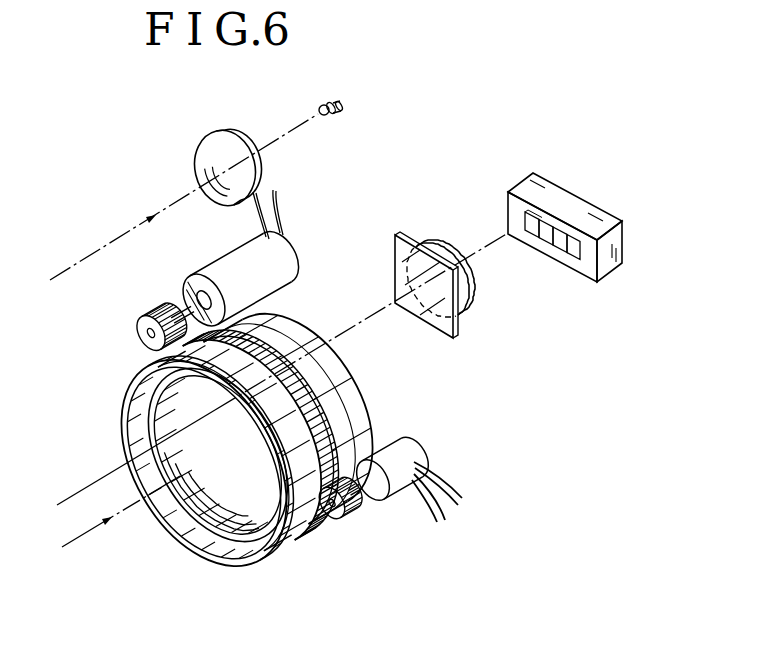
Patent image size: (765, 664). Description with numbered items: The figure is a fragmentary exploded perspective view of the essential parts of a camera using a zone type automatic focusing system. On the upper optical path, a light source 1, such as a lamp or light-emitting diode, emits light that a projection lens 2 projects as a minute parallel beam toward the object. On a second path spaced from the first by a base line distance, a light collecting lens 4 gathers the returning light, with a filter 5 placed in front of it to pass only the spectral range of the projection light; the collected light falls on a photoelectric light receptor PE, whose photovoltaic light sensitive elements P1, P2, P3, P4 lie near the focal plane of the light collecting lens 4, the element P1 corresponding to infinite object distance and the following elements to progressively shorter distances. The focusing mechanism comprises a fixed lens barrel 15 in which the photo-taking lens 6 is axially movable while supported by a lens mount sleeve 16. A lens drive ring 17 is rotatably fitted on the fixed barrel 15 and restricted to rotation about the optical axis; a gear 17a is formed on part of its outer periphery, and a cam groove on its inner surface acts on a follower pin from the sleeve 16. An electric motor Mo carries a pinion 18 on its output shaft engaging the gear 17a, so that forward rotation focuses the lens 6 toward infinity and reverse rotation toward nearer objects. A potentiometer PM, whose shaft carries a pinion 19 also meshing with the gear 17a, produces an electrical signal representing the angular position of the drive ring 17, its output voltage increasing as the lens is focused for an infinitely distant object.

The light source 1 is at (330, 104).
The projection lens 2 is at (231, 131).
The light collecting lens 4 is at (432, 243).
The filter 5 is at (460, 328).
The photo-taking lens 6 is at (257, 507).
The fixed lens barrel 15 is at (213, 560).
The lens mount sleeve 16 is at (200, 517).
The lens drive ring 17 is at (335, 388).
The gear 17a is at (340, 440).
The pinion 18 is at (154, 312).
The pinion 19 is at (354, 518).
The electric motor Mo is at (272, 256).
The potentiometer PM is at (400, 467).
The photoelectric light receptor PE is at (565, 237).
The photosensitive element P1 is at (531, 229).
The photosensitive element P2 is at (546, 233).
The photosensitive element P3 is at (560, 238).
The photosensitive element P4 is at (574, 245).